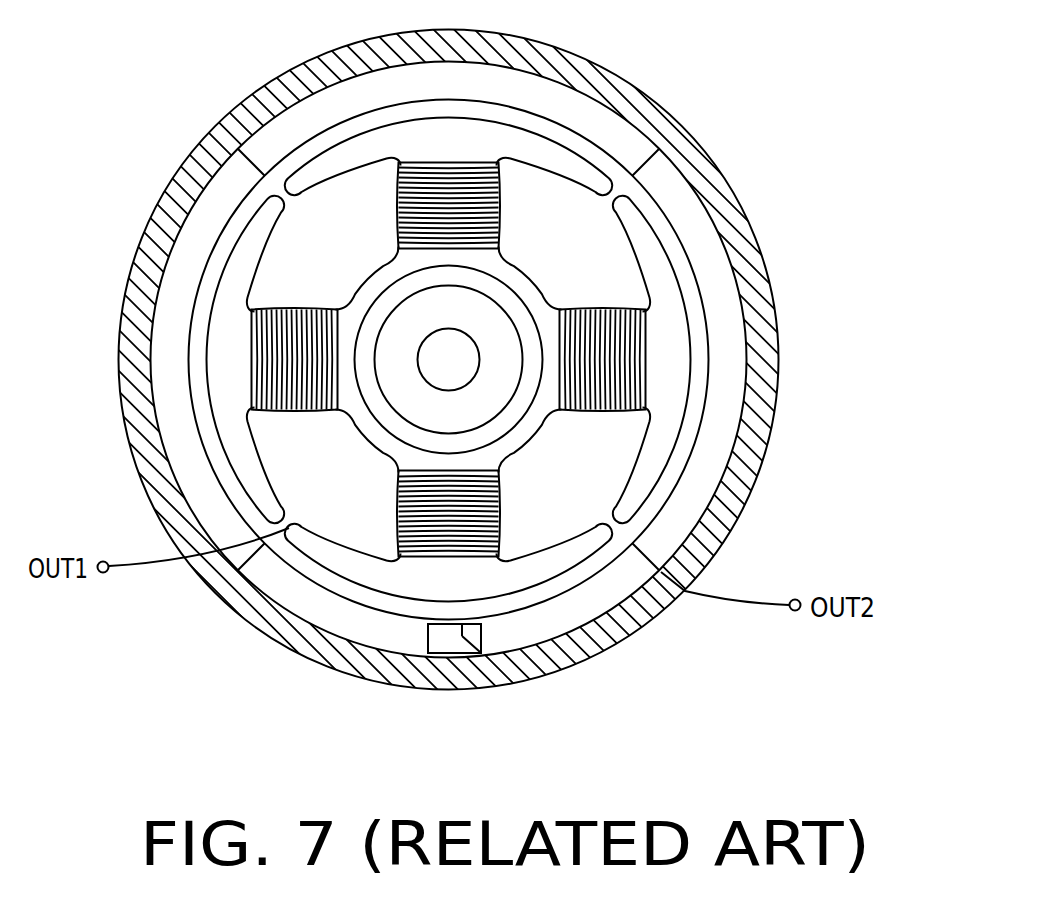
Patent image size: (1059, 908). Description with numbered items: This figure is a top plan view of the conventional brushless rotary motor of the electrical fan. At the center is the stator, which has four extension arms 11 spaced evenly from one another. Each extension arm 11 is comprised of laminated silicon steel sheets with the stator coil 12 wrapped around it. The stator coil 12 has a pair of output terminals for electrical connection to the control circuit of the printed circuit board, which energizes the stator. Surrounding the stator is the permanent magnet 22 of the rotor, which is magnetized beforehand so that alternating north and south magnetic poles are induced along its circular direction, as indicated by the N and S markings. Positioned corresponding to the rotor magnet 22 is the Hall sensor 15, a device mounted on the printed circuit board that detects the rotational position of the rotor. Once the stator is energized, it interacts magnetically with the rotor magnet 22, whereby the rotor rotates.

The extension arm 11 is at (451, 150).
The stator coil 12 is at (470, 186).
The Hall sensor 15 is at (500, 683).
The permanent magnet 22 is at (287, 590).